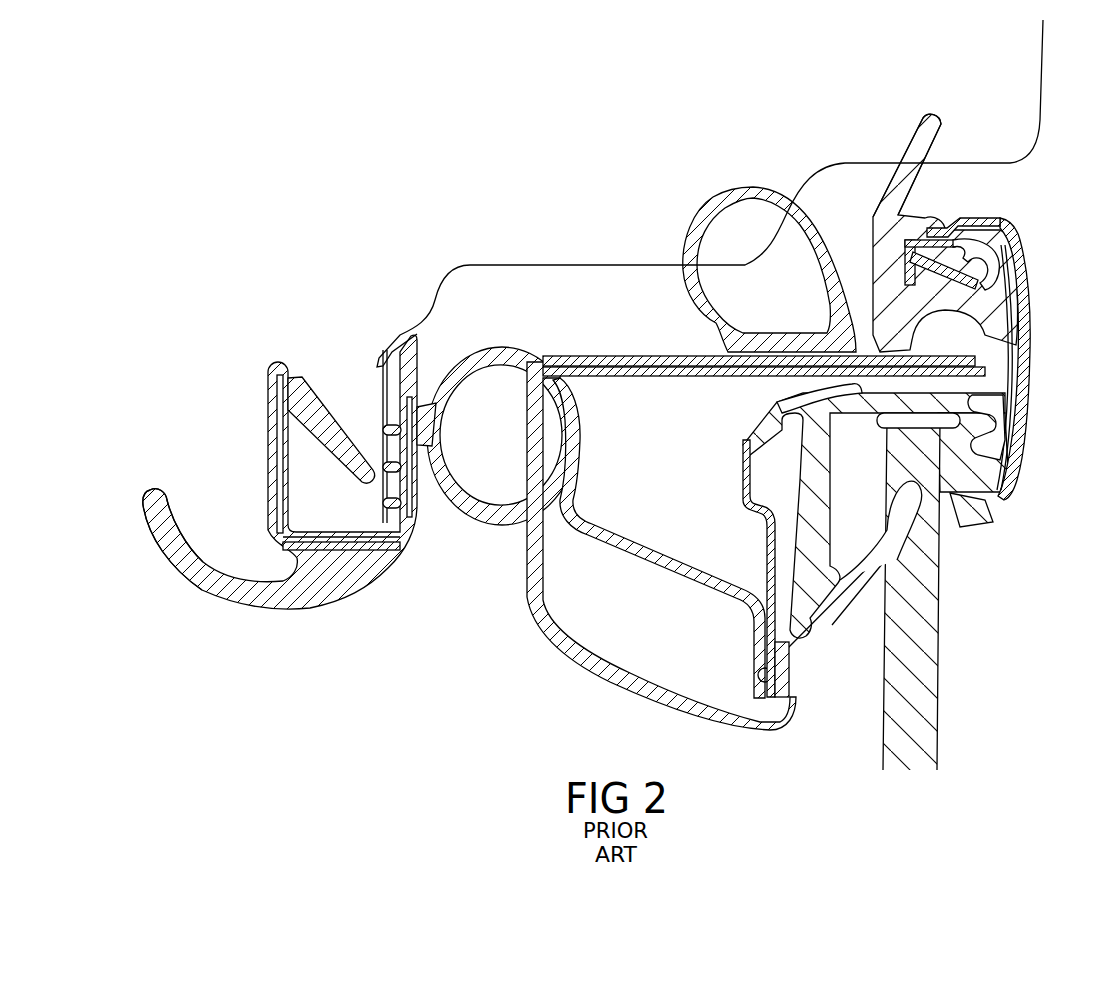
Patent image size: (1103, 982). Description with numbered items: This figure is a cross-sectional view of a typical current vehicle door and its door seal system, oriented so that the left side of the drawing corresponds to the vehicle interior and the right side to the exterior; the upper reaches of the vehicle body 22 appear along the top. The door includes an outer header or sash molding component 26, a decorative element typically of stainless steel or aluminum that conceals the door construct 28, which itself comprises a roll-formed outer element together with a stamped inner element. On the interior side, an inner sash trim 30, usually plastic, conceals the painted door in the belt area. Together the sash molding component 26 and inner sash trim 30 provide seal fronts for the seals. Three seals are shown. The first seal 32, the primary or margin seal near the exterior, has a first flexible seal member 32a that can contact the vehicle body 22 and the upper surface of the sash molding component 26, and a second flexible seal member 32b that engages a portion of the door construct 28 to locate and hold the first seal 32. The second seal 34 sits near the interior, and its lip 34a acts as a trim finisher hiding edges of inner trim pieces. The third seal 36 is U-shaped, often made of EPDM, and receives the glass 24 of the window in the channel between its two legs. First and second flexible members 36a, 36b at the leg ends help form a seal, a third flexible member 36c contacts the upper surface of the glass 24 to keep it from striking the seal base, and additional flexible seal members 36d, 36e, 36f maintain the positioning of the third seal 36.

The vehicle body 22 is at (507, 264).
The glass 24 is at (940, 683).
The sash molding component 26 is at (1030, 317).
The door construct 28 is at (977, 362).
The inner sash trim 30 is at (585, 660).
The first seal 32 is at (757, 186).
The first flexible seal member 32a is at (940, 115).
The second flexible seal member 32b is at (990, 282).
The second seal 34 is at (282, 612).
The lip 34a is at (168, 505).
The third seal 36 is at (812, 647).
The first flexible member 36a is at (915, 562).
The second flexible member 36b is at (952, 520).
The third flexible member 36c is at (947, 470).
The flexible seal member 36d is at (988, 396).
The flexible seal member 36e is at (862, 378).
The flexible seal member 36f is at (797, 672).